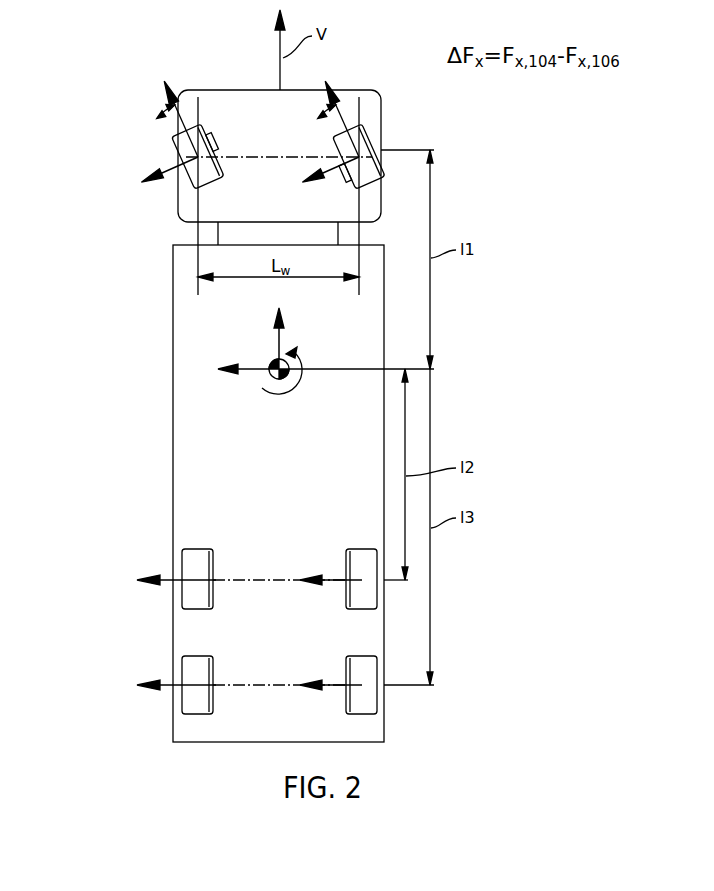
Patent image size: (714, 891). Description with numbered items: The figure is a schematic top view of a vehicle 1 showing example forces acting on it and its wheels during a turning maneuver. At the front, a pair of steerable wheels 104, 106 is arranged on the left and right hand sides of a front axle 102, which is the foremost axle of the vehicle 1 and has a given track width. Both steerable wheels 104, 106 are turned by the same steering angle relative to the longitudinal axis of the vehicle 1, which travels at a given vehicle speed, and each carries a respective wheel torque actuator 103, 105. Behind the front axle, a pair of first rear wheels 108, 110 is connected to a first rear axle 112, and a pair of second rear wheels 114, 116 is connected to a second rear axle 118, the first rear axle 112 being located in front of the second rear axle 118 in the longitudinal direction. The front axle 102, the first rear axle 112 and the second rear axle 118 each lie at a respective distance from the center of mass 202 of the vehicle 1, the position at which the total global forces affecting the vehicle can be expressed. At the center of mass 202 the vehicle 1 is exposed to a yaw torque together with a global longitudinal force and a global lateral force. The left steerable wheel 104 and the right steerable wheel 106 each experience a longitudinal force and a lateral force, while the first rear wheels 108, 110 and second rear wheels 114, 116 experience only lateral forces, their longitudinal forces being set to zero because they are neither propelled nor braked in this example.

The vehicle 1 is at (204, 416).
The front axle 102 is at (298, 160).
The wheel torque actuator 103 is at (226, 150).
The steerable wheel 104 is at (180, 186).
The wheel torque actuator 105 is at (312, 146).
The steerable wheel 106 is at (378, 132).
The first rear wheel 108 is at (182, 594).
The first rear wheel 110 is at (378, 592).
The first rear axle 112 is at (282, 582).
The second rear wheel 114 is at (182, 699).
The second rear wheel 116 is at (378, 697).
The second rear axle 118 is at (282, 687).
The center of mass 202 is at (322, 402).